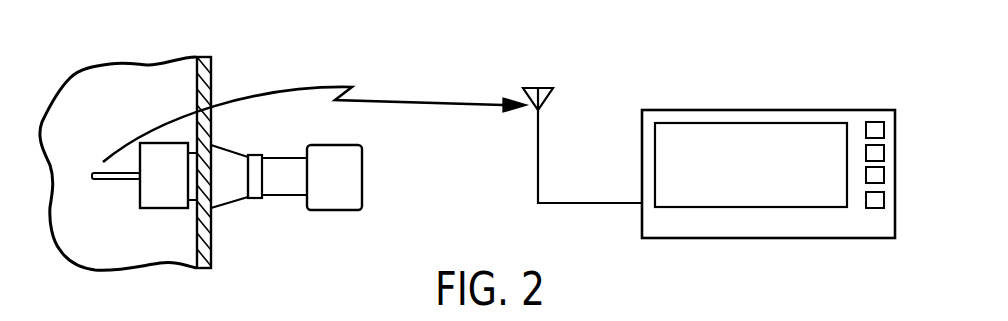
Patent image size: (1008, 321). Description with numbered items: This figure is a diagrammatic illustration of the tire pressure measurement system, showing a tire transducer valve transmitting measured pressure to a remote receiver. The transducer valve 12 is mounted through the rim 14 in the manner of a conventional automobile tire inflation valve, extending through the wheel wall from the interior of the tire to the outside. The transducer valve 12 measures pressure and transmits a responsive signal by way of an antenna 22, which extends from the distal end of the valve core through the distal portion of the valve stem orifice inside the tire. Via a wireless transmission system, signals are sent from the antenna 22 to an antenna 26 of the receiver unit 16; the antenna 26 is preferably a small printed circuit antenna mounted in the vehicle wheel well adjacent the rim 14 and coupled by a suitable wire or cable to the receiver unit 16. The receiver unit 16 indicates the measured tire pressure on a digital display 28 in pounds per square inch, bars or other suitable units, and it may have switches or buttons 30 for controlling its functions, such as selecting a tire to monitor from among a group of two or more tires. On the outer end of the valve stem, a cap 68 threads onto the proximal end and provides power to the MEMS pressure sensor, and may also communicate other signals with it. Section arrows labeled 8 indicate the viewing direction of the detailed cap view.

The section line / viewing direction 8 is at (302, 175).
The transducer valve 12 is at (227, 148).
The rim 14 is at (212, 68).
The receiver unit 16 is at (803, 110).
The antenna 22 is at (115, 181).
The antenna 26 is at (542, 110).
The digital display 28 is at (723, 133).
The buttons 30 is at (875, 128).
The cap 68 is at (343, 145).